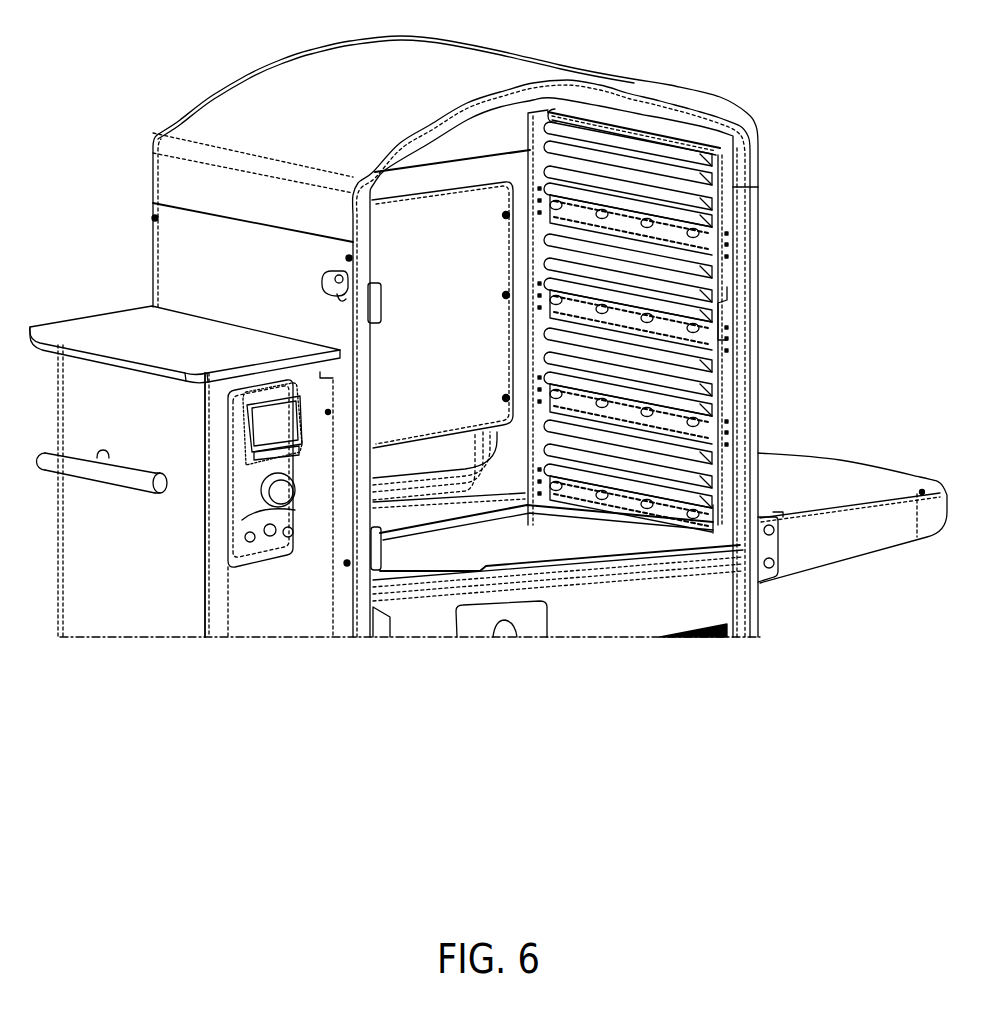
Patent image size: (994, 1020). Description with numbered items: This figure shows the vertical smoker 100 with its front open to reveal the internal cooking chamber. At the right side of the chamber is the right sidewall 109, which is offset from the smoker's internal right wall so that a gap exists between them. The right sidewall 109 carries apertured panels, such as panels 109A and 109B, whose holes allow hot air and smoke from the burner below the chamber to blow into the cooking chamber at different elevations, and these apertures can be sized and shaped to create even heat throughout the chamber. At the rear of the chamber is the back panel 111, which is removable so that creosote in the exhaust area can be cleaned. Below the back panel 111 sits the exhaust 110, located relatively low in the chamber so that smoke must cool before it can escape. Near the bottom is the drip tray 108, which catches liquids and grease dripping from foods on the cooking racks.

The vertical smoker 100 is at (768, 77).
The drip tray 108 is at (583, 534).
The right sidewall 109 is at (718, 320).
The panel 109A is at (727, 245).
The panel 109B is at (727, 338).
The exhaust 110 is at (395, 455).
The back panel 111 is at (420, 373).